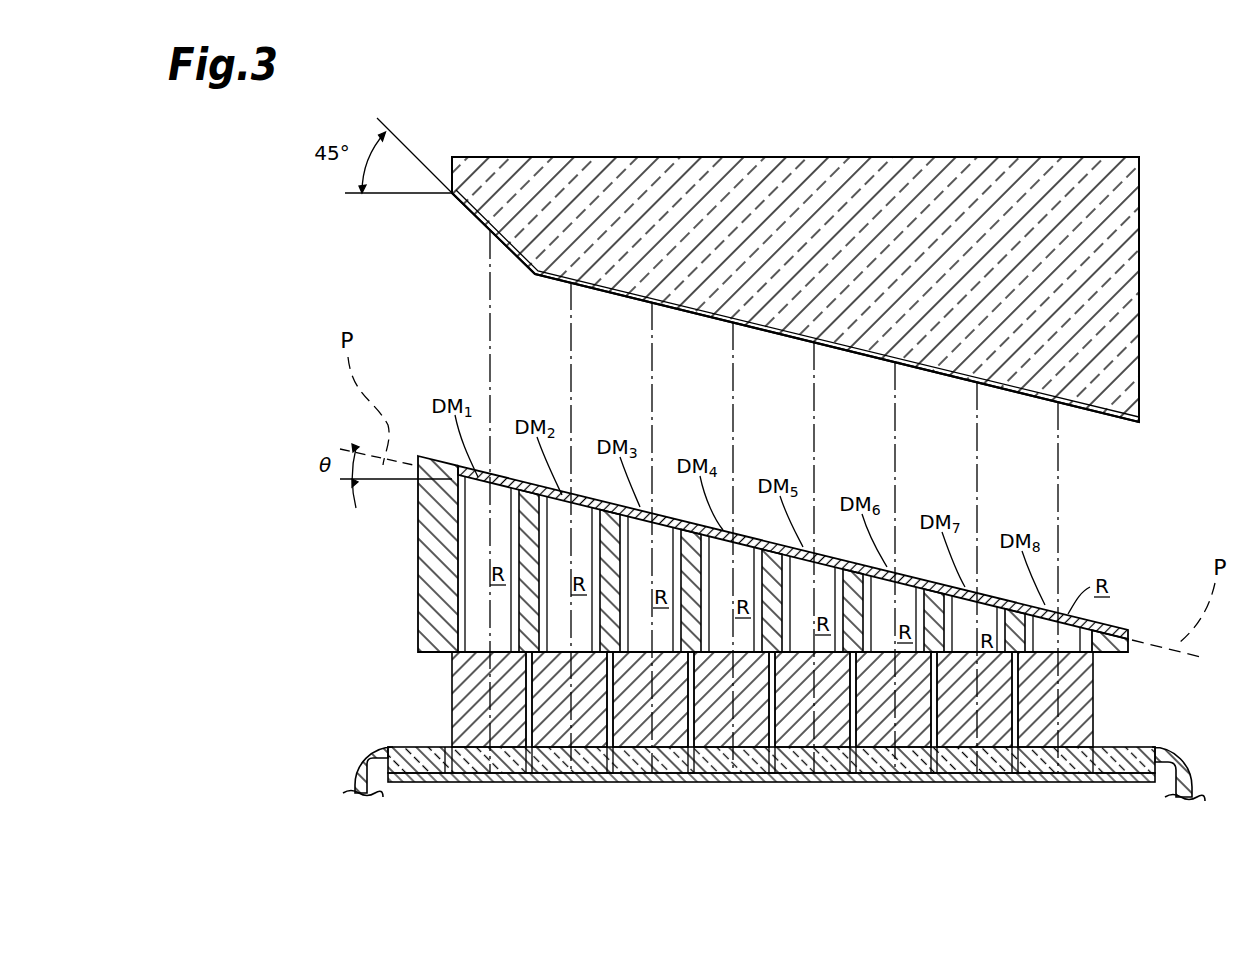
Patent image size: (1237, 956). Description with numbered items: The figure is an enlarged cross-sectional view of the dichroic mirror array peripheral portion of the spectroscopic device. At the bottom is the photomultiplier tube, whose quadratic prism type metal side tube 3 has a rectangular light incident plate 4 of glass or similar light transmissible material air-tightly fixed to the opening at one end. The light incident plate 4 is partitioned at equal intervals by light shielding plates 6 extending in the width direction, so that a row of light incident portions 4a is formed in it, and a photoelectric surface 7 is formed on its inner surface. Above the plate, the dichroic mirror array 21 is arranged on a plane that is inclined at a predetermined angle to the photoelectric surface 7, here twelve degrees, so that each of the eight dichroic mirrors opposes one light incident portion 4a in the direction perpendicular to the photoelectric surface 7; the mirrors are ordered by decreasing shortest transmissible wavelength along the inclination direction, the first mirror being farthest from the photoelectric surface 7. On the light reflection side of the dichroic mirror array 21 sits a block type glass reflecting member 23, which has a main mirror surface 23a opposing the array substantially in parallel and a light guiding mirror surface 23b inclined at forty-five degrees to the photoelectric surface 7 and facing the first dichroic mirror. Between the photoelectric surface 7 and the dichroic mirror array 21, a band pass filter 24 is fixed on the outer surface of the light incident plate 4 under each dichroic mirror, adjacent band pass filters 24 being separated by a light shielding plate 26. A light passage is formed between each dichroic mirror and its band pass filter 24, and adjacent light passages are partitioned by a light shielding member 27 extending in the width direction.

The side tube 3 is at (360, 770).
The light incident plate 4 is at (1150, 752).
The light incident portion 4a is at (512, 766).
The light shielding plate 6 is at (438, 778).
The photoelectric surface 7 is at (1083, 782).
The dichroic mirror array 21 is at (1082, 600).
The reflecting member 23 is at (1125, 264).
The main mirror surface 23a is at (1080, 405).
The light guiding mirror surface 23b is at (485, 228).
The band pass filter 24 is at (455, 670).
The light shielding plate 26 is at (523, 712).
The light shielding member 27 is at (532, 523).